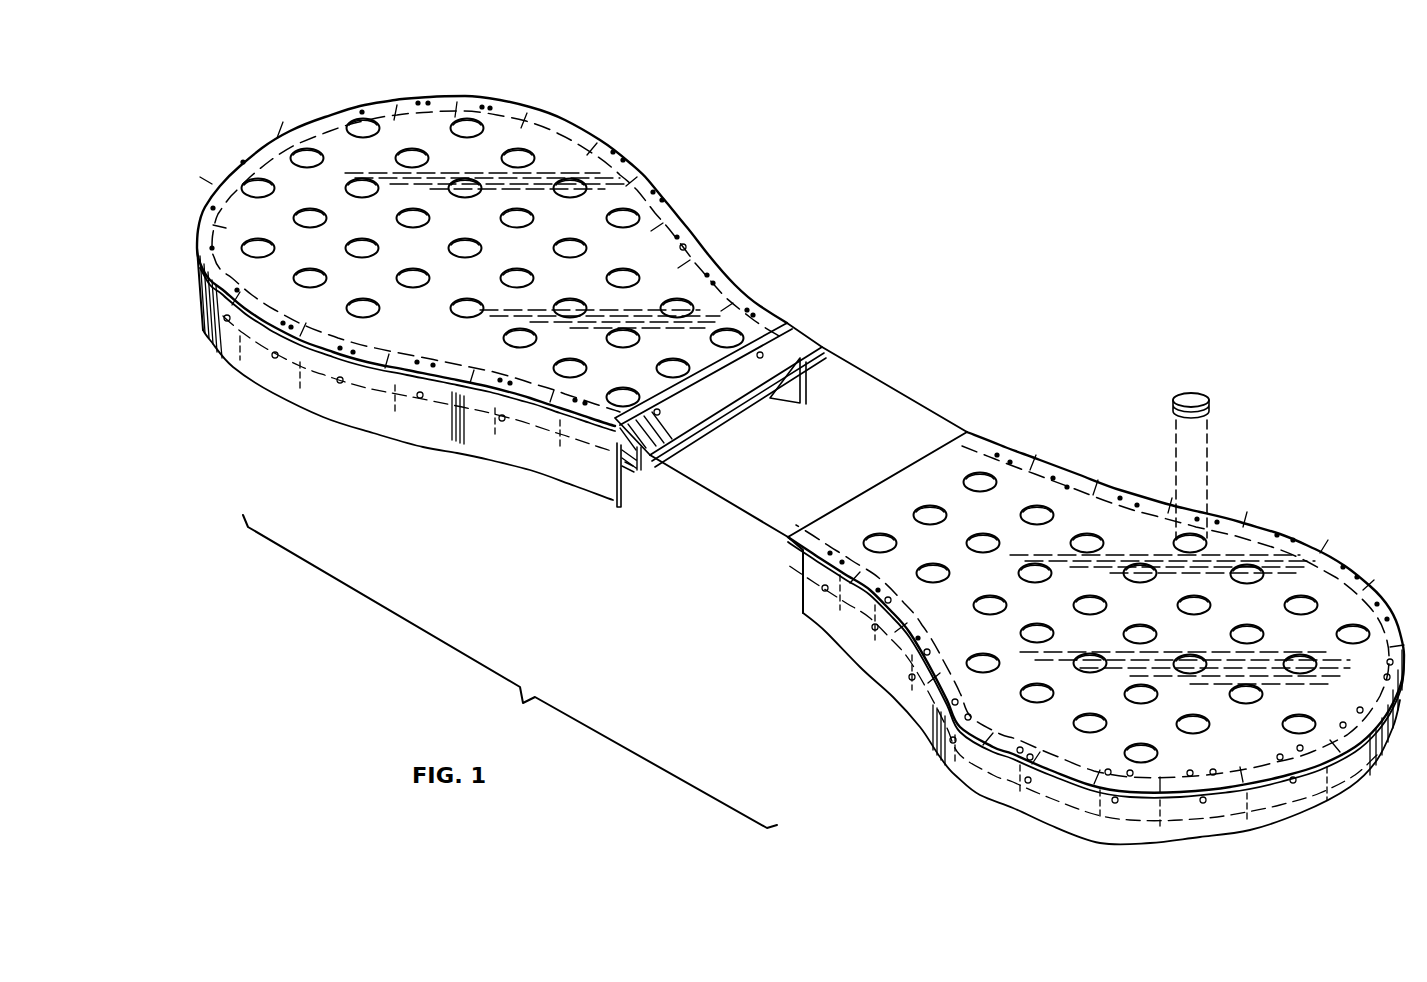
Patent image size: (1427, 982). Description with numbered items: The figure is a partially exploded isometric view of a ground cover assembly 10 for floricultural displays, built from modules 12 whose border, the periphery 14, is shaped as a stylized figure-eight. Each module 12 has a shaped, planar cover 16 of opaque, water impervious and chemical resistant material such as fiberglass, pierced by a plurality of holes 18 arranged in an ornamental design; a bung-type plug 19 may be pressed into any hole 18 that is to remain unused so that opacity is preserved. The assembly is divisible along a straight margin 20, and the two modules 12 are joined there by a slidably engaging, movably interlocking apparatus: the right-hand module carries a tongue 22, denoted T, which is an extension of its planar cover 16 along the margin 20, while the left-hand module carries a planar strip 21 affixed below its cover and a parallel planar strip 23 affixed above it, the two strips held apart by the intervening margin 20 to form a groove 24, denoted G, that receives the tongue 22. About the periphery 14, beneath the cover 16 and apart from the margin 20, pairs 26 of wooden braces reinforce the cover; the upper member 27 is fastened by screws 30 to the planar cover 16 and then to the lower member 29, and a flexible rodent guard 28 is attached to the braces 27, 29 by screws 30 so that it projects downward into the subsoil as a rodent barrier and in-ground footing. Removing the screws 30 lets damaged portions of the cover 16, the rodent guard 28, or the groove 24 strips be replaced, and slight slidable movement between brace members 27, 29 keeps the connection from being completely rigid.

The ground cover assembly 10 is at (1104, 152).
The module 12 is at (707, 265).
The periphery 14 is at (322, 125).
The planar cover 16 is at (617, 175).
The holes 18 is at (413, 277).
The plug 19 is at (1208, 400).
The margin 20 is at (712, 420).
The planar strip 21 is at (753, 403).
The tongue 22 is at (787, 533).
The planar strip 23 is at (803, 343).
The groove 24 is at (813, 367).
The pair of wooden braces 26 is at (613, 445).
The upper member 27 is at (607, 460).
The rodent guard 28 is at (505, 442).
The lower member 29 is at (630, 467).
The screws 30 is at (683, 245).
The groove G is at (866, 392).
The tongue T is at (965, 432).